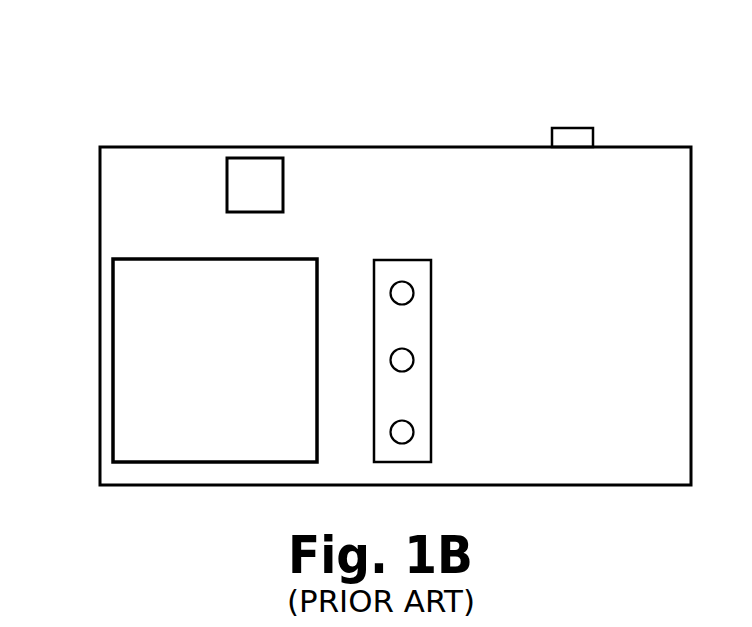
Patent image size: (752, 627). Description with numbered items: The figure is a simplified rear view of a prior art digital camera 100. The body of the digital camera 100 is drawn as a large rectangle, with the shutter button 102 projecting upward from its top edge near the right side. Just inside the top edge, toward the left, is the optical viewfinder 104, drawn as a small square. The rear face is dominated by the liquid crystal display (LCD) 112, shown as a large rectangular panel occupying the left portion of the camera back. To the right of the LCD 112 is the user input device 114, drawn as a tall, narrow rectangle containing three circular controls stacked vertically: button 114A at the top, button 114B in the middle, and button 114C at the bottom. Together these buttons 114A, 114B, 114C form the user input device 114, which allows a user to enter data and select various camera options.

The digital camera 100 is at (167, 127).
The shutter button 102 is at (569, 128).
The optical viewfinder 104 is at (257, 158).
The liquid crystal display (LCD) 112 is at (113, 350).
The user input device 114 is at (407, 258).
The button 114A is at (414, 293).
The button 114B is at (414, 358).
The button 114C is at (414, 432).